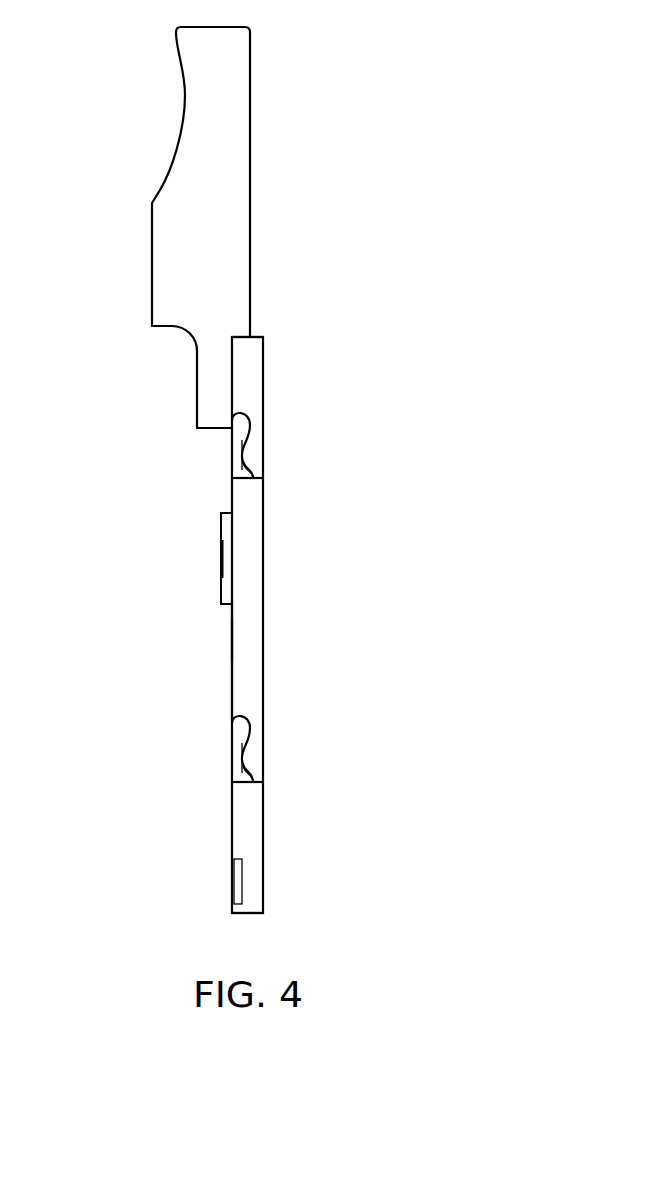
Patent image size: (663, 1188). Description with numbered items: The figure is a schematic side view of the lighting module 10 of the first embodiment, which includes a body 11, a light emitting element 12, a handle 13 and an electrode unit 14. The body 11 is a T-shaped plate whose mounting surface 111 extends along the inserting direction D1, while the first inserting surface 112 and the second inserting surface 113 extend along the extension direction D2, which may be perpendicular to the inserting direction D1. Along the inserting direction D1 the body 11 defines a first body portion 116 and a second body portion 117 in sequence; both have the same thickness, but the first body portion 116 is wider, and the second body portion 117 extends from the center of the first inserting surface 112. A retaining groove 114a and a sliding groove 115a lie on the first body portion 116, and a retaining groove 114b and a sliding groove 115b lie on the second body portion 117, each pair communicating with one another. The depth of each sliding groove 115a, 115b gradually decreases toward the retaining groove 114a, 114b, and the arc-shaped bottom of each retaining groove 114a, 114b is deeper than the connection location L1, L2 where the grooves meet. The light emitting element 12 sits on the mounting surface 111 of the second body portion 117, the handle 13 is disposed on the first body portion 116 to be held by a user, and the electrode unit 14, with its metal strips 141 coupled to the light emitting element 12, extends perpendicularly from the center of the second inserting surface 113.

The lighting module 10 is at (390, 104).
The body 11 is at (295, 558).
The light emitting element 12 is at (220, 555).
The handle 13 is at (180, 92).
The electrode unit 14 is at (231, 845).
The mounting surface 111 is at (232, 657).
The first inserting surface 112 is at (250, 478).
The second inserting surface 113 is at (252, 785).
The retaining groove 114a is at (233, 425).
The retaining groove 114b is at (233, 725).
The sliding groove 115a is at (248, 470).
The sliding groove 115b is at (248, 770).
The first body portion 116 is at (252, 383).
The second body portion 117 is at (250, 608).
The metal strips 141 is at (236, 878).
The connection location L1 is at (242, 452).
The connection location L2 is at (242, 752).
The inserting direction D1 is at (137, 242).
The extension direction D2 is at (80, 583).